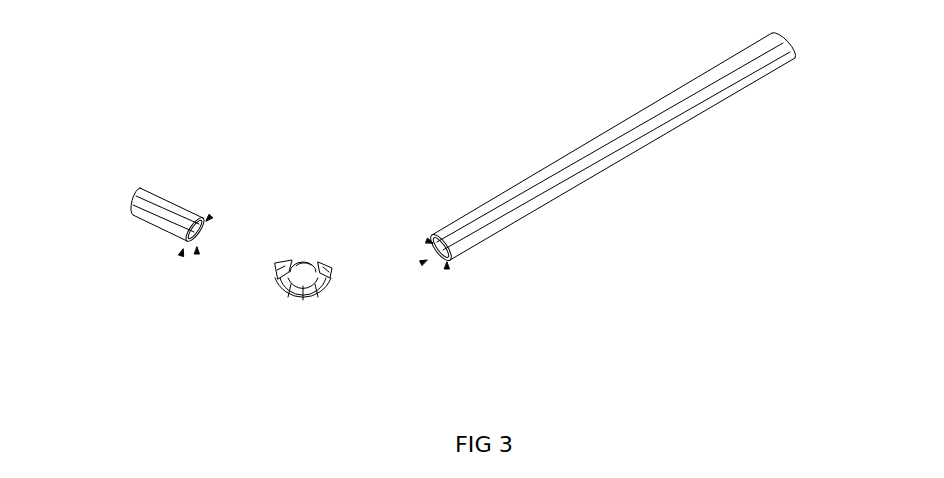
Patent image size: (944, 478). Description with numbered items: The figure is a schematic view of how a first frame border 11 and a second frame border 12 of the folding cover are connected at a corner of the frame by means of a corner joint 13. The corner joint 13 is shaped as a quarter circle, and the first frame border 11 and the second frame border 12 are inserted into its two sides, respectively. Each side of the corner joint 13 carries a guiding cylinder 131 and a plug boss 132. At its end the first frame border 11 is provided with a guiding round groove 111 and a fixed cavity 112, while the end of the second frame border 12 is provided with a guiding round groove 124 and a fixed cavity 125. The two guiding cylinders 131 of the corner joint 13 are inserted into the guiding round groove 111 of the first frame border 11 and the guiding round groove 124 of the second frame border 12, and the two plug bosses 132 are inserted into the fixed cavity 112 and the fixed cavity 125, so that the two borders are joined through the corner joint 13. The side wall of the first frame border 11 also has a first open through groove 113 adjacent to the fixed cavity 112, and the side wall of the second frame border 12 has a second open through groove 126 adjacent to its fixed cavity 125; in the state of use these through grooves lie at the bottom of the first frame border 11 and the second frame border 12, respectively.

The first frame border 11 is at (180, 220).
The guiding round groove 111 is at (183, 251).
The fixed cavity 112 is at (208, 219).
The first open through groove 113 is at (197, 252).
The second frame border 12 is at (527, 207).
The guiding round groove 124 is at (447, 266).
The fixed cavity 125 is at (430, 241).
The second open through groove 126 is at (423, 262).
The corner joint 13 is at (302, 287).
The guiding cylinder 131 is at (282, 285).
The plug boss 132 is at (313, 240).